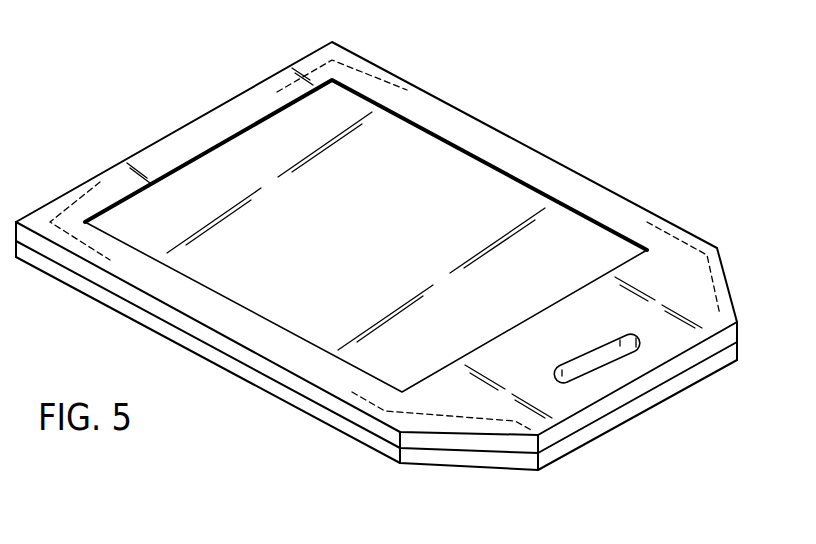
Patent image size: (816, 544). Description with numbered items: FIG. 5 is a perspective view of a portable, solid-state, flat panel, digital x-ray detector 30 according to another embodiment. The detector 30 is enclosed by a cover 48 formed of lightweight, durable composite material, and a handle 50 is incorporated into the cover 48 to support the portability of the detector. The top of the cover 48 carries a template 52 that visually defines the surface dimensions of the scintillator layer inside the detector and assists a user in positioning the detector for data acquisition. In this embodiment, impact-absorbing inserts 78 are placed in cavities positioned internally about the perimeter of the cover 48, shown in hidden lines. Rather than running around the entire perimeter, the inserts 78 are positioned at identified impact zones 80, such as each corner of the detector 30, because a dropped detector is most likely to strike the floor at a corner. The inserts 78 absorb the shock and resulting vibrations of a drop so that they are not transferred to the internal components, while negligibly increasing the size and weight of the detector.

The x-ray detector 30 is at (685, 156).
The cover 48 is at (474, 400).
The handle 50 is at (594, 359).
The template 52 is at (451, 178).
The impact-absorbing inserts 78 is at (368, 72).
The impact zones 80 is at (332, 92).